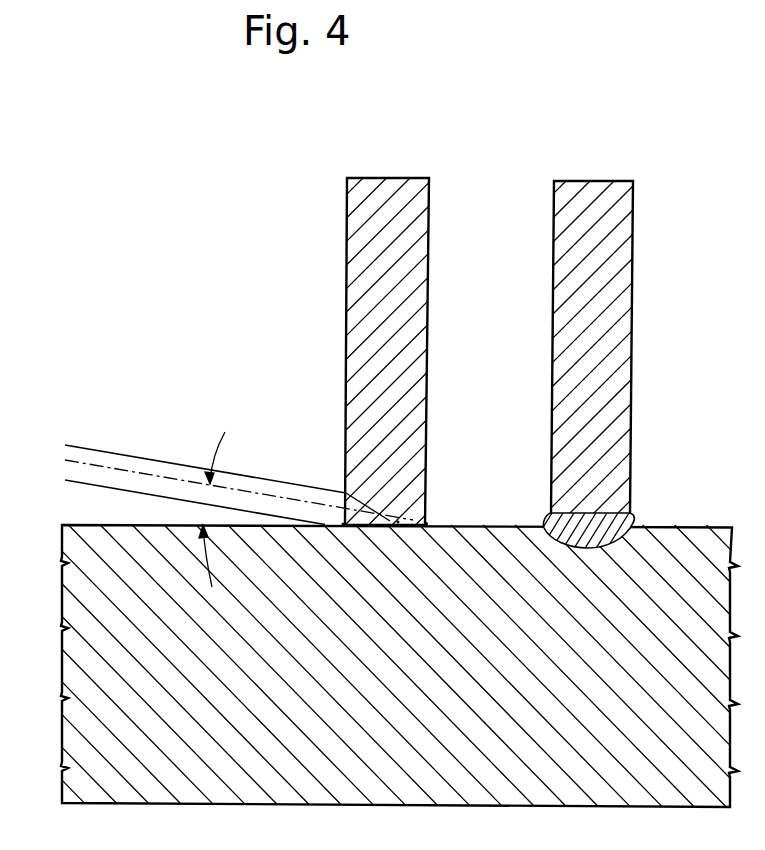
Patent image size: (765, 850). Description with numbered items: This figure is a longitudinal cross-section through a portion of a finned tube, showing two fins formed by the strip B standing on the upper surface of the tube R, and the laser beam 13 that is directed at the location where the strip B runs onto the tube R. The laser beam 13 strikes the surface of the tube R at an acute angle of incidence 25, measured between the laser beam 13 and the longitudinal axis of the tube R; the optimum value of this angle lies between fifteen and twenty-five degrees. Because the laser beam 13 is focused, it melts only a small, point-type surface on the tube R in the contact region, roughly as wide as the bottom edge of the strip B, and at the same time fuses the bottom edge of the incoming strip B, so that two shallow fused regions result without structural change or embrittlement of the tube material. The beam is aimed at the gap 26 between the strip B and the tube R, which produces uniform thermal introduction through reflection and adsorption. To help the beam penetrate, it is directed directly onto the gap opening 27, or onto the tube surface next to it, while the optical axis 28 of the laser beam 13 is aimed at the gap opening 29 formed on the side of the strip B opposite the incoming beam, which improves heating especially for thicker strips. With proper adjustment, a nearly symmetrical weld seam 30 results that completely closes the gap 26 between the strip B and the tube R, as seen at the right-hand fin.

The strip B is at (400, 198).
The tube R is at (87, 640).
The laser beam 13 is at (100, 458).
The optical axis 28 is at (152, 477).
The angle of incidence 25 is at (207, 517).
The gap opening 27 is at (343, 523).
The gap 26 is at (398, 522).
The gap opening 29 is at (426, 523).
The weld seam 30 is at (615, 530).